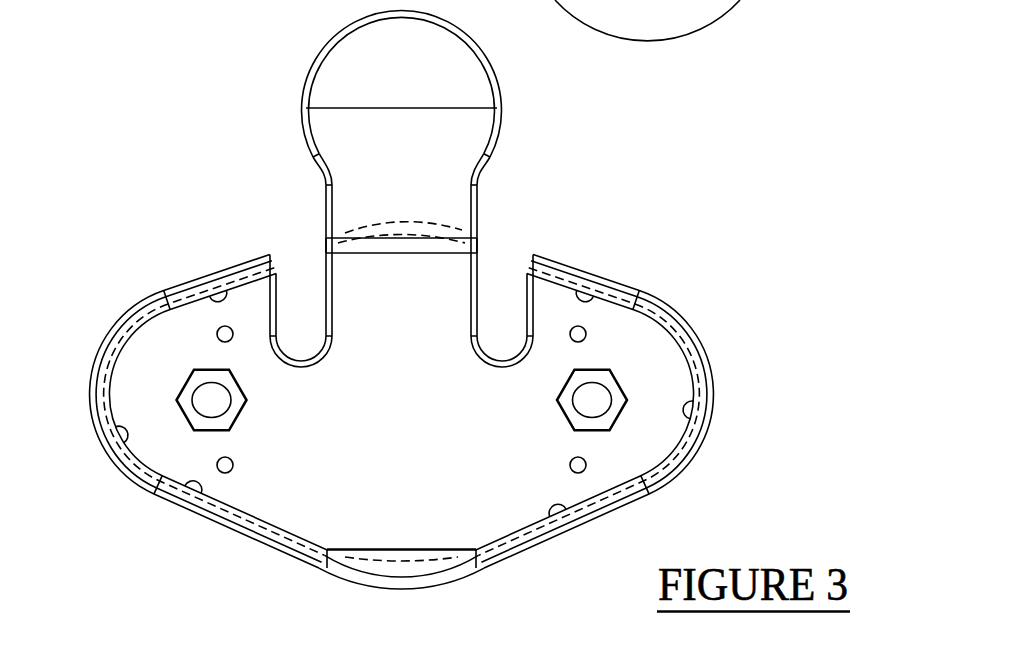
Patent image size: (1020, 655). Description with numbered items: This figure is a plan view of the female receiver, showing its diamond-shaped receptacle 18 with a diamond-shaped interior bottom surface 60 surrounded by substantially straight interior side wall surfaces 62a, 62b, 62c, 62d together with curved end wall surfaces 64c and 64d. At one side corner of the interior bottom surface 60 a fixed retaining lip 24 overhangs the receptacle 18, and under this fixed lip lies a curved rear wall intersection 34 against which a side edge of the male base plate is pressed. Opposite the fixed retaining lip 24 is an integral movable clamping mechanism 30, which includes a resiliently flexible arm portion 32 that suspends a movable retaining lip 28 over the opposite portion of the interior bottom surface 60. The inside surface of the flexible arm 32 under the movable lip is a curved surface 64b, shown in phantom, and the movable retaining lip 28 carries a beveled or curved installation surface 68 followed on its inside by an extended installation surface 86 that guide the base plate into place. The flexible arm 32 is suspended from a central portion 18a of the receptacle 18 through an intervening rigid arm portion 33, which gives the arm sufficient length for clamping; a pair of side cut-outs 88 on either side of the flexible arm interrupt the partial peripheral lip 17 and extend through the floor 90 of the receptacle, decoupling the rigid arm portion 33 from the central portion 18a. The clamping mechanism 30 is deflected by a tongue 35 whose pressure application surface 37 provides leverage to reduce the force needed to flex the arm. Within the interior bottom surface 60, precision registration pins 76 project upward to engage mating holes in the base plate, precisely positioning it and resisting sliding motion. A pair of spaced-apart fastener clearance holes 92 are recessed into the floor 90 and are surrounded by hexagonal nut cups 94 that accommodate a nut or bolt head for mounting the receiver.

The partial peripheral lip 17 is at (712, 415).
The receptacle 18 is at (148, 362).
The central portion of receptacle 18a is at (379, 367).
The fixed retaining lip 24 is at (337, 568).
The movable retaining lip 28 is at (343, 236).
The movable clamping mechanism 30 is at (266, 172).
The resiliently flexible arm portion 32 is at (455, 229).
The intervening rigid arm portion 33 is at (478, 292).
The curved rear wall intersection 34 is at (474, 551).
The tongue 35 is at (307, 70).
The pressure application surface 37 is at (405, 77).
The interior bottom surface 60 is at (413, 471).
The interior side wall surface 62a is at (191, 495).
The interior side wall surface 62b is at (562, 520).
The interior side wall surface 62c is at (570, 292).
The interior side wall surface 62d is at (215, 292).
The curved surface 64b is at (404, 265).
The curved end wall surface 64c is at (122, 440).
The curved end wall surface 64d is at (696, 404).
The installation surface 68 is at (382, 248).
The precision registration pins 76 is at (218, 330).
The extended installation surface 86 is at (400, 256).
The side cut-outs 88 is at (299, 256).
The floor 90 is at (645, 345).
The fastener clearance holes 92 is at (196, 397).
The nut cups 94 is at (192, 430).